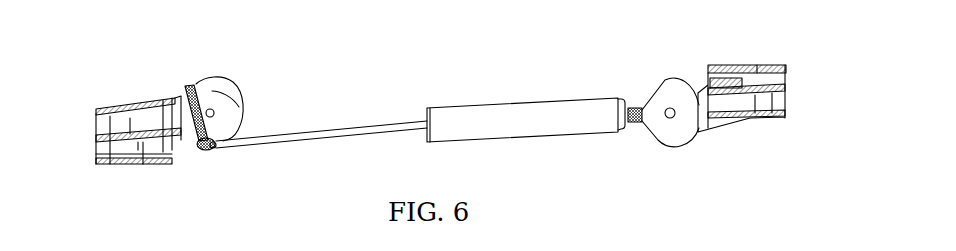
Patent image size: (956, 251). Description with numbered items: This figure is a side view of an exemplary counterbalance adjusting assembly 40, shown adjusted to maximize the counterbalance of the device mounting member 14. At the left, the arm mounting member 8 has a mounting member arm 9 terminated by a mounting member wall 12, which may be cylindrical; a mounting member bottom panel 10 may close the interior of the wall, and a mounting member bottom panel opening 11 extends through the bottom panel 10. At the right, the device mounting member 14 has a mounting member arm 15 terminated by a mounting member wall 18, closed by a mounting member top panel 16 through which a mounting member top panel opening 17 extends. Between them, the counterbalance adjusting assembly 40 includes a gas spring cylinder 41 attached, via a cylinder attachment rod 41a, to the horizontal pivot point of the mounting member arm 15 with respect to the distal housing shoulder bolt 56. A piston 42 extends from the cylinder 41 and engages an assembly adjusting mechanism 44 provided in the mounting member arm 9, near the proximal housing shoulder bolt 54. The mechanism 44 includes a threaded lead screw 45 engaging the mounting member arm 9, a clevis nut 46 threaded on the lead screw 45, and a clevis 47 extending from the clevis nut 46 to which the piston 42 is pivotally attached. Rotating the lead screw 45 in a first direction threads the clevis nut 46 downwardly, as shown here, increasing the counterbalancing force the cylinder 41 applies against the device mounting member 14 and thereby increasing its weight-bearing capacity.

The arm mounting member 8 is at (99, 112).
The threaded lead screw 45 is at (185, 96).
The mounting member wall 12 is at (96, 135).
The mounting member bottom panel 10 is at (115, 167).
The mounting member bottom panel opening 11 is at (140, 168).
The assembly adjusting mechanism 44 is at (188, 80).
The mounting member arm 9 is at (213, 91).
The proximal housing shoulder bolt 54 is at (215, 113).
The clevis nut 46 is at (199, 151).
The clevis 47 is at (217, 150).
The piston 42 is at (317, 93).
The counterbalance adjusting assembly 40 is at (400, 80).
The gas spring cylinder 41 is at (488, 117).
The cylinder attachment rod 41a is at (634, 100).
The mounting member arm 15 is at (658, 80).
The distal housing shoulder bolt 56 is at (655, 138).
The device mounting member 14 is at (791, 72).
The mounting member top panel opening 17 is at (747, 62).
The mounting member top panel 16 is at (772, 64).
The mounting member wall 18 is at (787, 96).